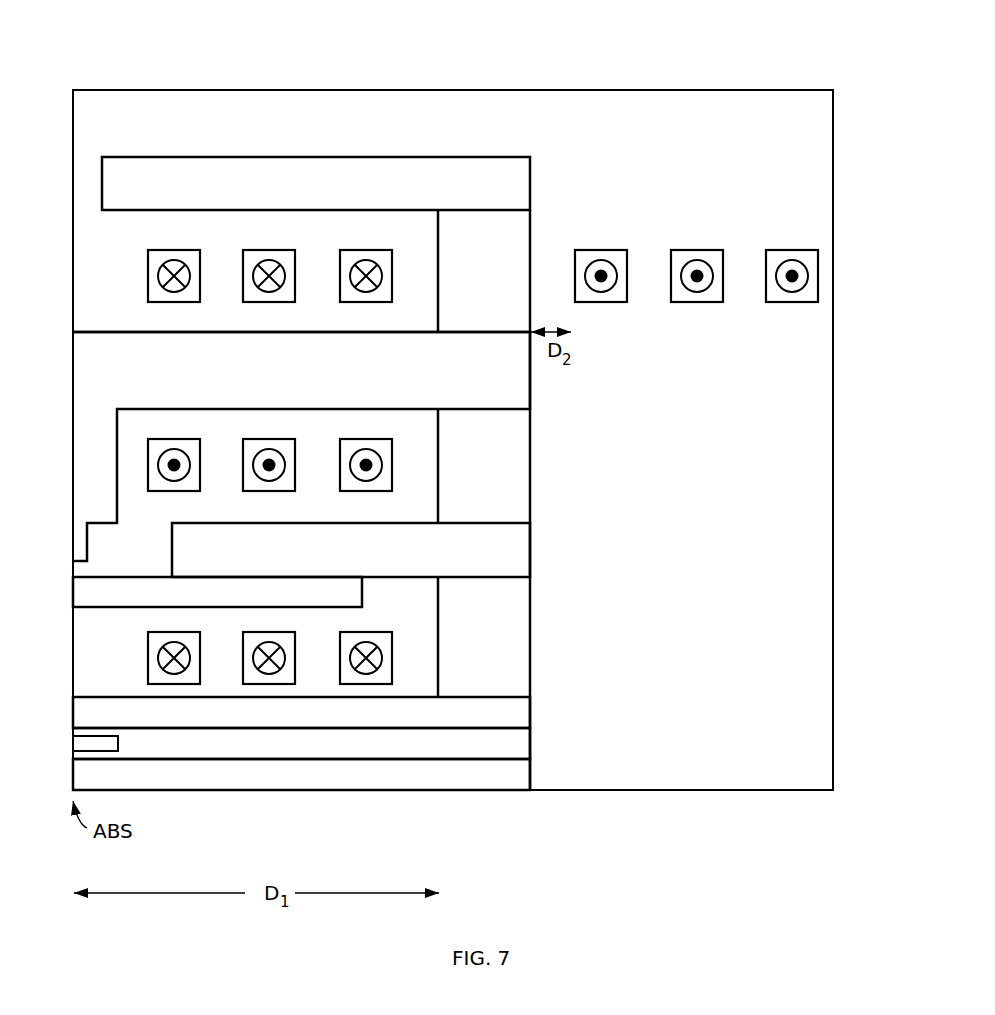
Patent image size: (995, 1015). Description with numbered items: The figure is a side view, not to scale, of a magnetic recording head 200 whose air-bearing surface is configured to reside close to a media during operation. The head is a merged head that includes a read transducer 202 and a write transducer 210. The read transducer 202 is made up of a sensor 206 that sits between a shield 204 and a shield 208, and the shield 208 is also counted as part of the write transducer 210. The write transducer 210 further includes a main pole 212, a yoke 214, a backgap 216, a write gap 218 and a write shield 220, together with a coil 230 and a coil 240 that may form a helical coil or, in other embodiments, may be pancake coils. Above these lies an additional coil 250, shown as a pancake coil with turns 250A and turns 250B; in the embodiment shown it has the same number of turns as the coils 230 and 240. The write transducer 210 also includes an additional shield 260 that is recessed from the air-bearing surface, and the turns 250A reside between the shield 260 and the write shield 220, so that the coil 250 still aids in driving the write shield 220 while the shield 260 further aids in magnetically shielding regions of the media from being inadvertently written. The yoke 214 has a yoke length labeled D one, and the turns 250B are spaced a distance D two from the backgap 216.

The magnetic recording head 200 is at (433, 38).
The read transducer 202 is at (653, 744).
The shield 204 is at (470, 791).
The sensor 206 is at (118, 743).
The shield 208 is at (530, 713).
The write transducer 210 is at (638, 76).
The main pole 212 is at (222, 608).
The yoke 214 is at (530, 560).
The backgap 216 is at (530, 492).
The write gap 218 is at (90, 563).
The write shield 220 is at (208, 333).
The coil 230 is at (409, 657).
The coil 240 is at (411, 462).
The additional coil 250 is at (483, 181).
The turns 250A is at (301, 236).
The turns 250B is at (697, 224).
The additional shield 260 is at (283, 157).